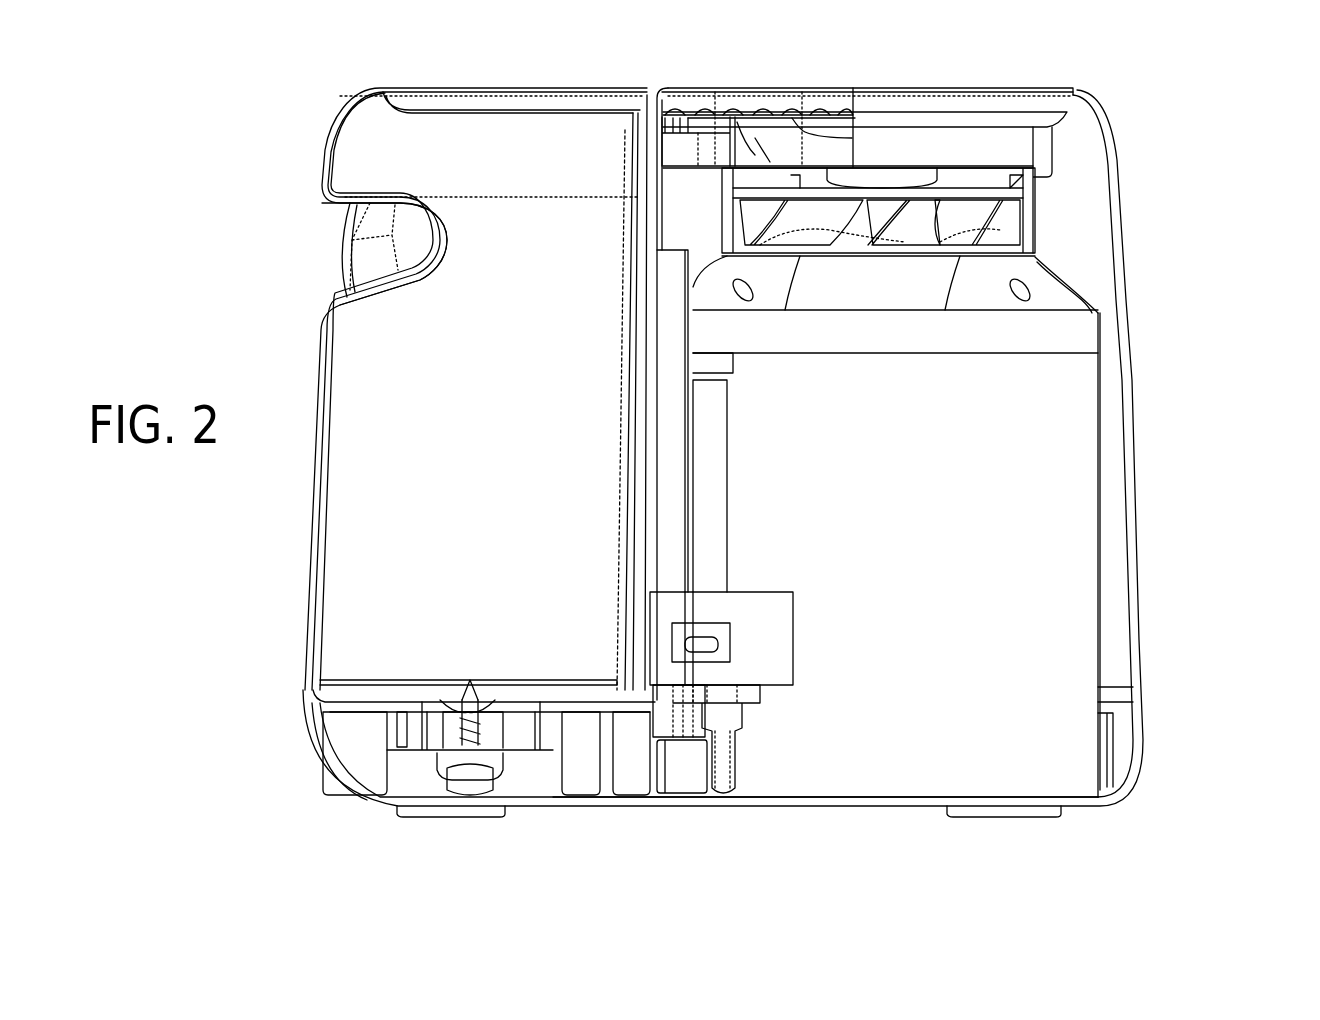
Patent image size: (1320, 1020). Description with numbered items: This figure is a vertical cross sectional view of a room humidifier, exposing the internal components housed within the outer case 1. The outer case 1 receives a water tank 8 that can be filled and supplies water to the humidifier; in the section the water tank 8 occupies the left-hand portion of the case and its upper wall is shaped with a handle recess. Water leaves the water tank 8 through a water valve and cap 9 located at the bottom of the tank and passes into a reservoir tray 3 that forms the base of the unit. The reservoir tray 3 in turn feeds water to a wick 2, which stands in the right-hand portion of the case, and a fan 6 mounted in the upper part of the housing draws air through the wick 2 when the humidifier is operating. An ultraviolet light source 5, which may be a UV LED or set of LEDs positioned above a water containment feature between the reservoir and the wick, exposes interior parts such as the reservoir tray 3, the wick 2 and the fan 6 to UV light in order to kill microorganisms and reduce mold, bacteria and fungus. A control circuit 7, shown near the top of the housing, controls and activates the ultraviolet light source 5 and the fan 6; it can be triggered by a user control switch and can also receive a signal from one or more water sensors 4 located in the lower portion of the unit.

The outer case 1 is at (1128, 178).
The wick 2 is at (1100, 470).
The reservoir tray 3 is at (548, 800).
The water sensor 4 is at (710, 790).
The ultraviolet light source 5 is at (660, 741).
The fan 6 is at (1022, 232).
The control circuit 7 is at (670, 100).
The water tank 8 is at (332, 305).
The water valve and cap 9 is at (462, 688).